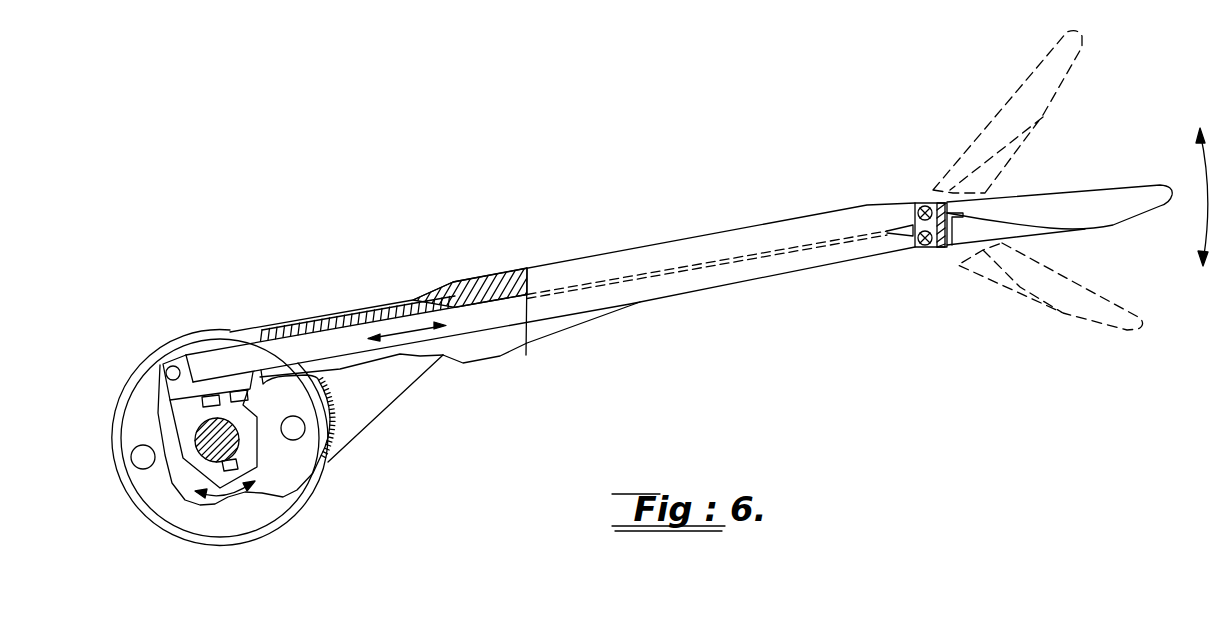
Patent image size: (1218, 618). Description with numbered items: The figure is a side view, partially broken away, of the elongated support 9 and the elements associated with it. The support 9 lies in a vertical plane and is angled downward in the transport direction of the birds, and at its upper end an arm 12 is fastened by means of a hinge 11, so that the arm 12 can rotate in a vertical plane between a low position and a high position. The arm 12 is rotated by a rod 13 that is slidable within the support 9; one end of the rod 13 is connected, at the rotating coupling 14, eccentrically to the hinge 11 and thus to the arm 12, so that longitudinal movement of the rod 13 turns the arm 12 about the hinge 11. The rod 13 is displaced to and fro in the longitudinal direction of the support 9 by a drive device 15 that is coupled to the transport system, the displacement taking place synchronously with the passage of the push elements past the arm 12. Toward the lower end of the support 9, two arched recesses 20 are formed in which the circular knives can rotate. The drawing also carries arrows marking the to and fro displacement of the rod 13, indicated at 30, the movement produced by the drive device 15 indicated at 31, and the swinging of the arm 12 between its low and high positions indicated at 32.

The support 9 is at (693, 244).
The hinge 11 is at (921, 208).
The arm 12 is at (1050, 207).
The rod 13 is at (496, 320).
The rotating coupling connection 14 is at (928, 248).
The drive device 15 is at (188, 523).
The arched recesses 20 is at (558, 264).
The rack drive 30 is at (400, 333).
The pivoting cam 31 is at (233, 498).
The blade swing arrow 32 is at (1203, 172).